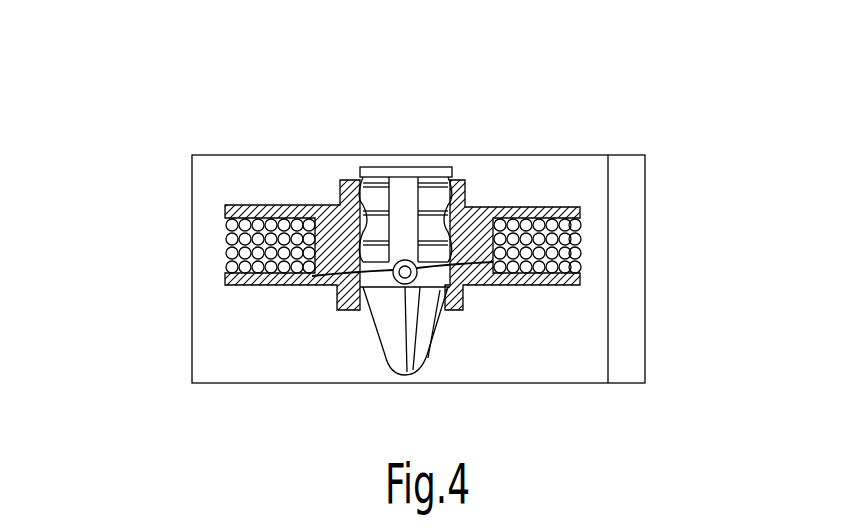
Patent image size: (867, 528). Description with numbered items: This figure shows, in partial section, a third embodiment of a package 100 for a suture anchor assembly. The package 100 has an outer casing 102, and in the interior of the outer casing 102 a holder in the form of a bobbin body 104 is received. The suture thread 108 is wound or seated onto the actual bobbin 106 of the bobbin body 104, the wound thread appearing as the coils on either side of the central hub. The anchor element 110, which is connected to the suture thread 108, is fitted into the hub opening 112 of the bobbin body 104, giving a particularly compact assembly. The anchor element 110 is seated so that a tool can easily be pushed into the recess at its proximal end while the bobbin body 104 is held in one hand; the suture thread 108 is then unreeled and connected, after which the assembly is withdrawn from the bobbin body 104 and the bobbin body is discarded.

The package 100 is at (418, 239).
The outer casing 102 is at (195, 327).
The bobbin body 104 is at (270, 174).
The bobbin 106 is at (480, 222).
The suture thread 108 is at (580, 235).
The anchor element 110 is at (437, 173).
The hub opening 112 is at (365, 308).